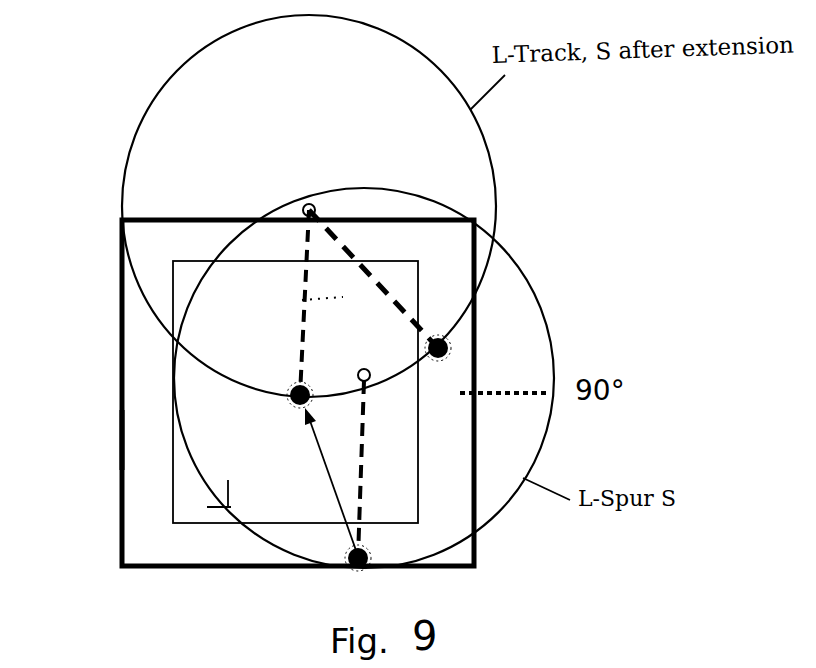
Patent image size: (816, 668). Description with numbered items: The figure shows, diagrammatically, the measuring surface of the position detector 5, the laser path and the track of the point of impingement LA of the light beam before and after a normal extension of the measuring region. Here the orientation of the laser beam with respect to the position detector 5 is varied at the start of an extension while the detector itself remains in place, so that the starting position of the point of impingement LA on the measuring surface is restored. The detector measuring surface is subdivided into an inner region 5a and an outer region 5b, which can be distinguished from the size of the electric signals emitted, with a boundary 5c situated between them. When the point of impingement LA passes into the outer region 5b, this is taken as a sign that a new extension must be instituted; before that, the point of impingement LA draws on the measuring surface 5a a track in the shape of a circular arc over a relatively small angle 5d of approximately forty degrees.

The position detector 5 is at (122, 544).
The inner region of the detector measuring surface 5a is at (193, 387).
The outer region of the detector measuring surface 5b is at (145, 431).
The boundary 5c is at (173, 484).
The angle 5d is at (343, 297).
The point of impingement LA is at (362, 562).